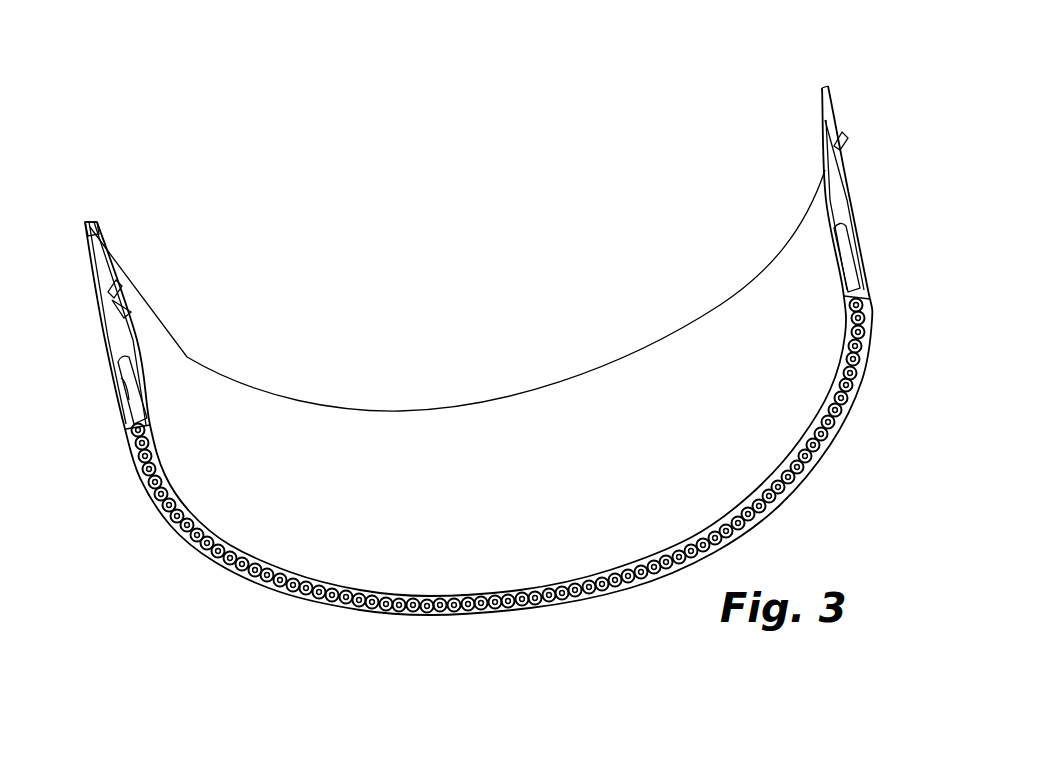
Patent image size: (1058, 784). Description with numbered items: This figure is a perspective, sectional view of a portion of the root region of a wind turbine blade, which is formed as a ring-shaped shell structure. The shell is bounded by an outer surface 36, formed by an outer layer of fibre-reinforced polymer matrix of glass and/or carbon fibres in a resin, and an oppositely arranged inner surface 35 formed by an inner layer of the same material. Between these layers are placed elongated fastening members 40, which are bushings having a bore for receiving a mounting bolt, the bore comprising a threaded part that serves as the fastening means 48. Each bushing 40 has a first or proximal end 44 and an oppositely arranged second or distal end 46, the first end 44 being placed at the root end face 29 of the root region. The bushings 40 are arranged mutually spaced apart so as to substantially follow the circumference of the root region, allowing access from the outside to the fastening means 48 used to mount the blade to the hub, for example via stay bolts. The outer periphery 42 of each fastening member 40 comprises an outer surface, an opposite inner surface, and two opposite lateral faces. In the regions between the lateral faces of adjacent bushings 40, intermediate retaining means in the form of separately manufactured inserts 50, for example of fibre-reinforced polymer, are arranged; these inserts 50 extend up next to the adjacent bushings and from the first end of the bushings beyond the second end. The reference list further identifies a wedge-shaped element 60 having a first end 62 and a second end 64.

The root end face 29 is at (868, 374).
The inner surface of root region 35 is at (278, 433).
The outer surface of root region 36 is at (848, 188).
The fastening member, bushing 40 is at (181, 530).
The outer periphery of fastening member 42 is at (117, 375).
The first end of fastening member 44 is at (128, 452).
The second end of fastening member 46 is at (96, 323).
The fastening means, threaded bore 48 is at (515, 494).
The insert 50 is at (393, 614).
The wedge-shaped element 60 is at (116, 280).
The first end of wedge-shaped element 62 is at (122, 330).
The second end of wedge-shaped element 64 is at (93, 233).